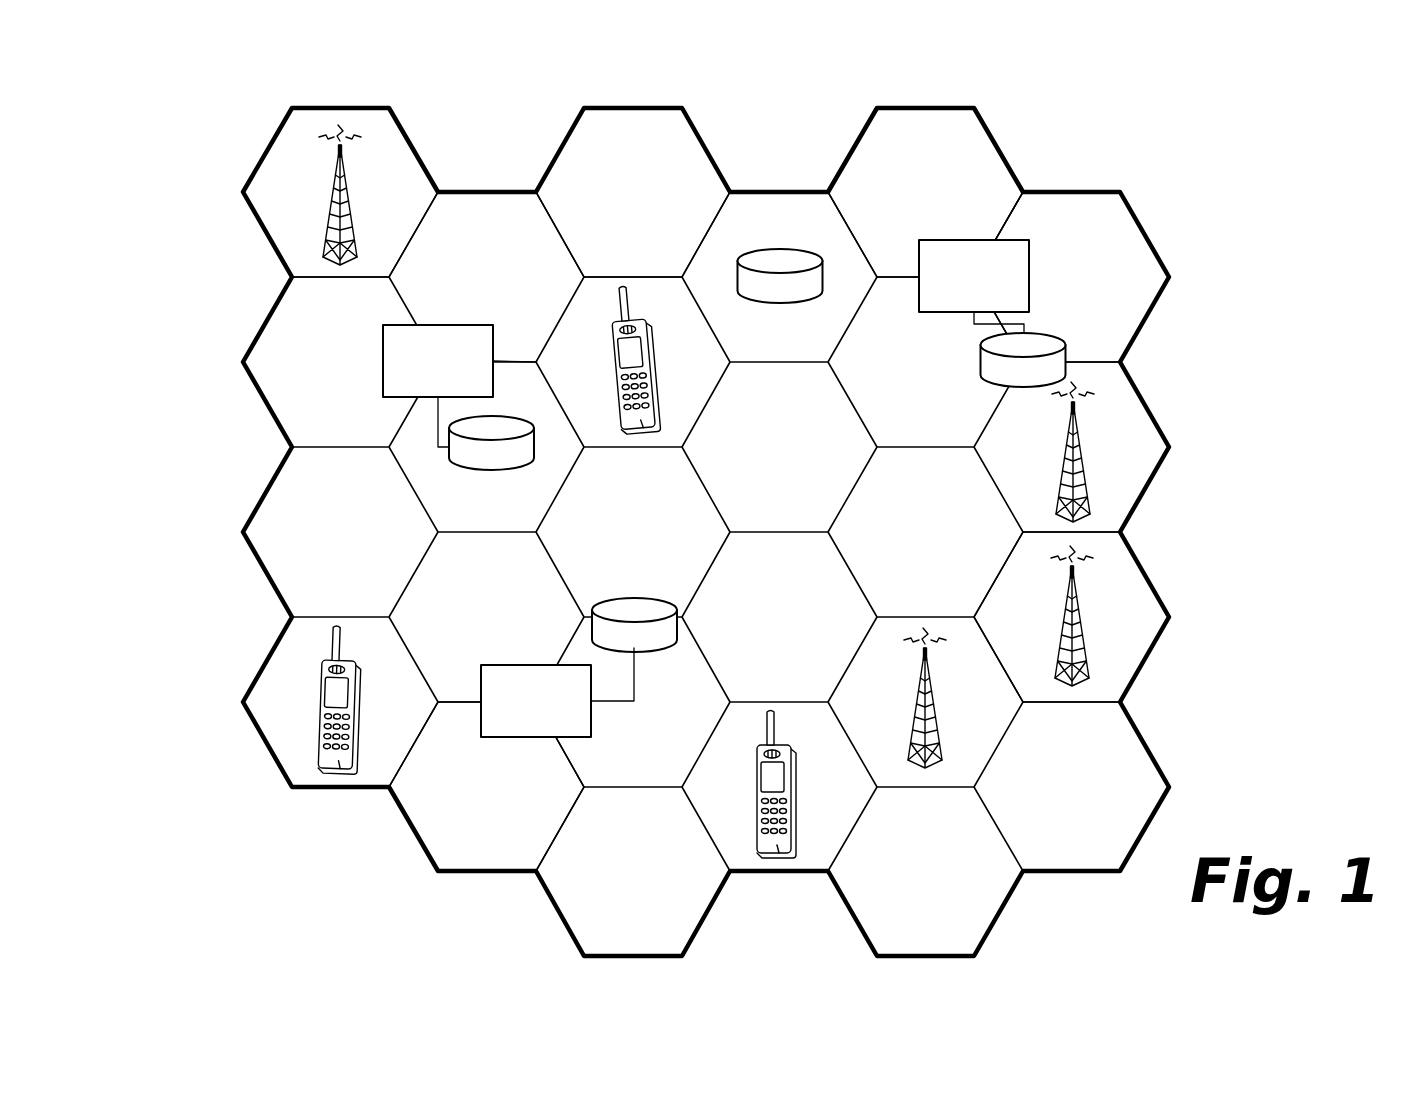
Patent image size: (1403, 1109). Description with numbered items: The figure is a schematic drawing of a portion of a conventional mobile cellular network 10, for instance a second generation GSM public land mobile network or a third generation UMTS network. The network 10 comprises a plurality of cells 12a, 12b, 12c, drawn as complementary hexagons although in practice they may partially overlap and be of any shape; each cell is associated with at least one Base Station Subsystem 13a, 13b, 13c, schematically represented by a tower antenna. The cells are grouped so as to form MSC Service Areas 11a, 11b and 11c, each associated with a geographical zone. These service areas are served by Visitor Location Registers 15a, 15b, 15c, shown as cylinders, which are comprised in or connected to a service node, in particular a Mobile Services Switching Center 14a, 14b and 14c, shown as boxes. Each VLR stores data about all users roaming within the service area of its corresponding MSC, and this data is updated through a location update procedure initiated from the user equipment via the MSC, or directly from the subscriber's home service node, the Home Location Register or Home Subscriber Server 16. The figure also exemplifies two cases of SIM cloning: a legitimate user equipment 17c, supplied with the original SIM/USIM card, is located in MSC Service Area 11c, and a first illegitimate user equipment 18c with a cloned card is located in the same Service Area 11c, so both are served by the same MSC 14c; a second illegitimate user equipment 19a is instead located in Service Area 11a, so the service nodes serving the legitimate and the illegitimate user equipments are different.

The mobile cellular network 10 is at (503, 181).
The MSC Service Area 11a is at (292, 108).
The MSC Service Area 11b is at (975, 104).
The MSC Service Area 11c is at (437, 878).
The cell 12a is at (643, 170).
The cell 12b is at (1098, 260).
The cell 12c is at (1113, 580).
The Base Station Subsystem 13a is at (330, 233).
The Base Station Subsystem 13b is at (1083, 487).
The Base Station Subsystem 13c is at (1082, 700).
The Mobile Services Switching Center 14a is at (427, 353).
The Mobile Services Switching Center 14b is at (961, 270).
The Mobile Services Switching Center 14c is at (520, 695).
The Visitor Location Register 15a is at (488, 456).
The Visitor Location Register 15b is at (1020, 367).
The Visitor Location Register 15c is at (636, 608).
The Home Location Register or Home Subscriber Server 16 is at (785, 286).
The legitimate user equipment 17c is at (773, 777).
The first illegitimate user equipment 18c is at (330, 692).
The second illegitimate user equipment 19a is at (627, 353).